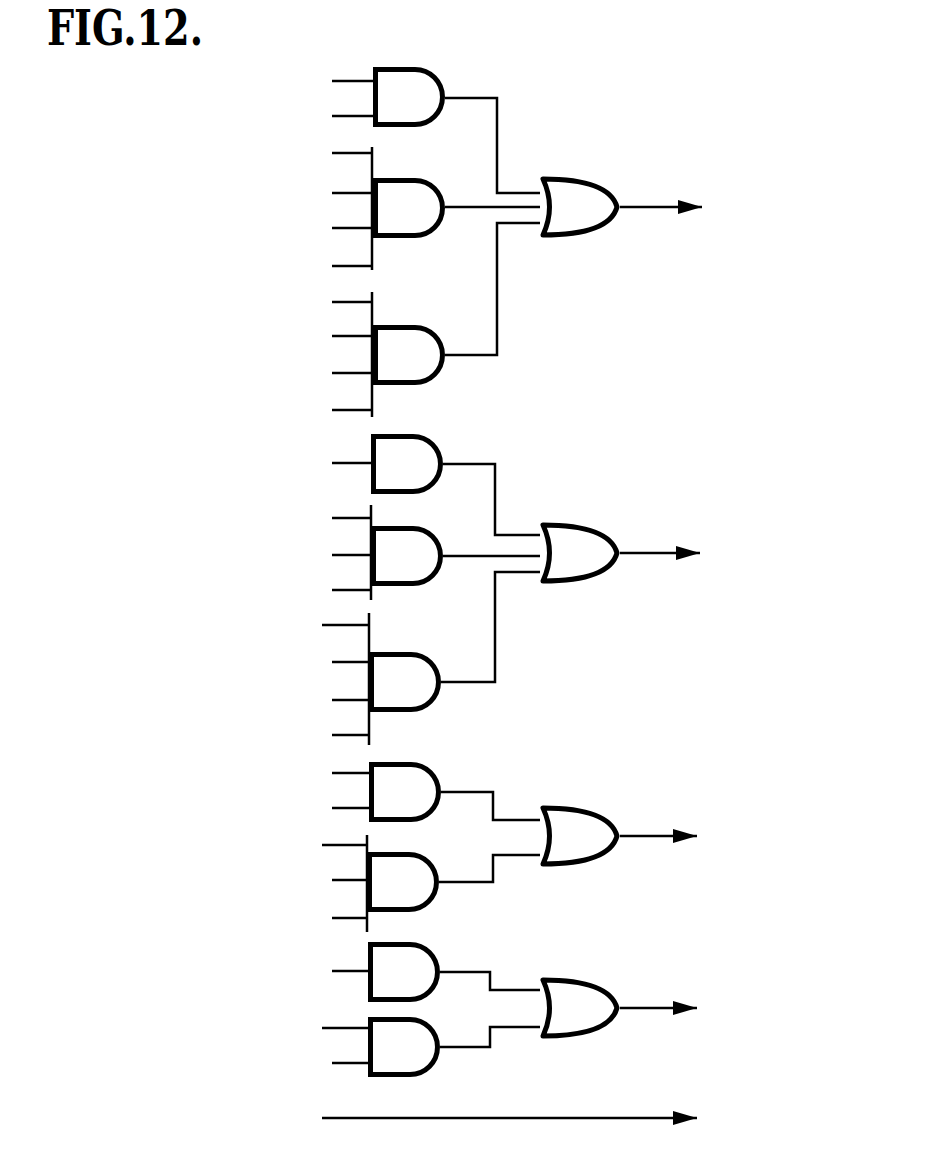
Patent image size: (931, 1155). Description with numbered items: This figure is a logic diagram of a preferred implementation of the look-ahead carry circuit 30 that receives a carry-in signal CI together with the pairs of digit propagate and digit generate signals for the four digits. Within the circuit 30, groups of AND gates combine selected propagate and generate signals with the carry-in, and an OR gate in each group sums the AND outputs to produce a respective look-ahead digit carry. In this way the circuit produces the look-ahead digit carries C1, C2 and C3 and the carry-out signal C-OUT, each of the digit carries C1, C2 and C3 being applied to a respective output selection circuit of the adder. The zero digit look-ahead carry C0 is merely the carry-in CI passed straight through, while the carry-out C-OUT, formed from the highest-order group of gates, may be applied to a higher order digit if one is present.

The carry look-ahead logic circuit 30 is at (145, 1032).
The carry-out signal C-OUT is at (664, 207).
The look-ahead digit carry signal C3 is at (640, 553).
The look-ahead digit carry signal C2 is at (639, 836).
The look-ahead digit carry signal C1 is at (639, 1008).
The look-ahead digit carry signal C0 is at (529, 1119).